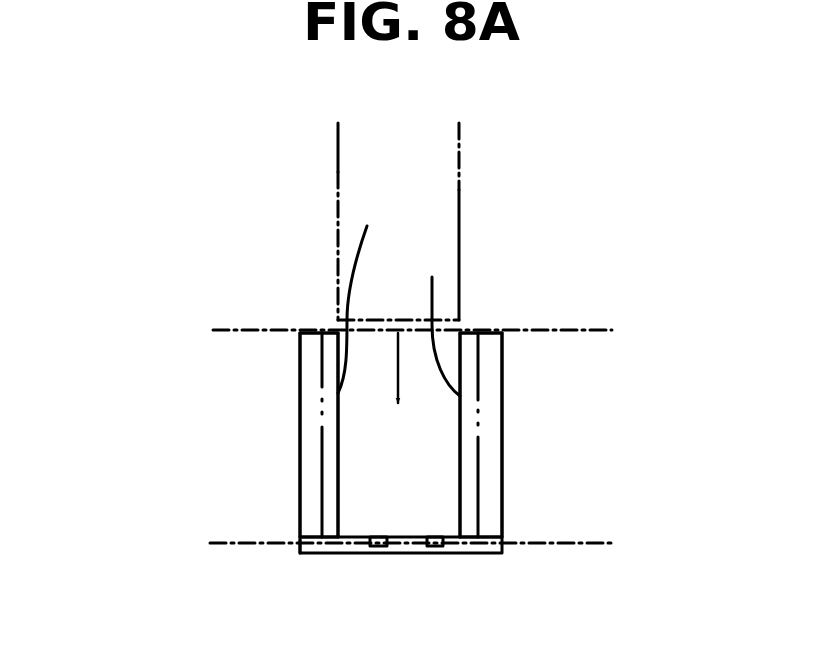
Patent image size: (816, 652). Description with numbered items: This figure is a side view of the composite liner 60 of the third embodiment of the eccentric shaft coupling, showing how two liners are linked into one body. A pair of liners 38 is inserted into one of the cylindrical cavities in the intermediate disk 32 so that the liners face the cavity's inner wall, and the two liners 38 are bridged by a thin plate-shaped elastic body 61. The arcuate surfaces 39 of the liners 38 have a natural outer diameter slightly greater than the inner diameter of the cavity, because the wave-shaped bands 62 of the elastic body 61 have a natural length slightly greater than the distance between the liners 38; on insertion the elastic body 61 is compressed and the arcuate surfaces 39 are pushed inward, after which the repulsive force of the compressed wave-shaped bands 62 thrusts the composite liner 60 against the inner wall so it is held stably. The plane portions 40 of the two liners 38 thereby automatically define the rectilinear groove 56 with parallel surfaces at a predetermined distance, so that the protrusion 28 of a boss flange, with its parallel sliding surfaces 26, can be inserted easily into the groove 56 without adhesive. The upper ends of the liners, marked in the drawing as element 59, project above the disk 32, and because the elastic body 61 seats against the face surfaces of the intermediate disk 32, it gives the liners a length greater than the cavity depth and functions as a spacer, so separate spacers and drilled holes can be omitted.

The sliding surface 26 is at (337, 163).
The protrusion 28 is at (355, 323).
The intermediate disk 32 is at (595, 547).
The liner 38 is at (300, 428).
The arcuate surface 39 is at (299, 465).
The plane portion 40 is at (399, 292).
The rectilinear groove 56 is at (423, 458).
The top end of side wall 59 is at (307, 330).
The composite liner 60 is at (552, 272).
The plate-shaped elastic body 61 is at (298, 552).
The wave-shaped band 62 is at (395, 557).